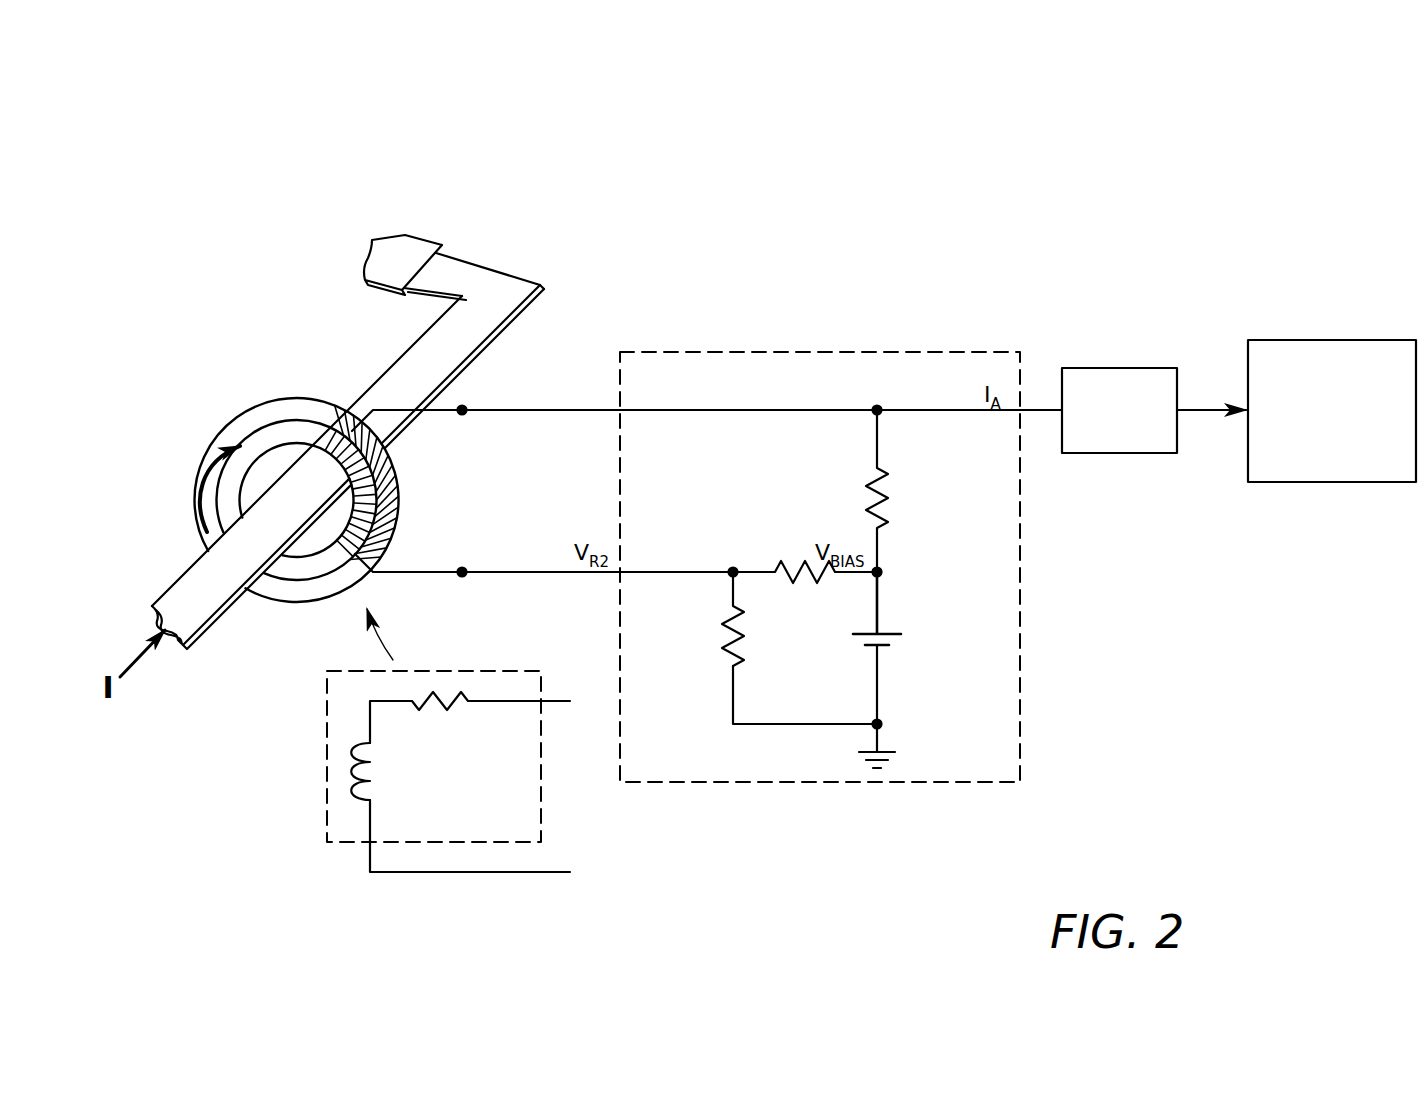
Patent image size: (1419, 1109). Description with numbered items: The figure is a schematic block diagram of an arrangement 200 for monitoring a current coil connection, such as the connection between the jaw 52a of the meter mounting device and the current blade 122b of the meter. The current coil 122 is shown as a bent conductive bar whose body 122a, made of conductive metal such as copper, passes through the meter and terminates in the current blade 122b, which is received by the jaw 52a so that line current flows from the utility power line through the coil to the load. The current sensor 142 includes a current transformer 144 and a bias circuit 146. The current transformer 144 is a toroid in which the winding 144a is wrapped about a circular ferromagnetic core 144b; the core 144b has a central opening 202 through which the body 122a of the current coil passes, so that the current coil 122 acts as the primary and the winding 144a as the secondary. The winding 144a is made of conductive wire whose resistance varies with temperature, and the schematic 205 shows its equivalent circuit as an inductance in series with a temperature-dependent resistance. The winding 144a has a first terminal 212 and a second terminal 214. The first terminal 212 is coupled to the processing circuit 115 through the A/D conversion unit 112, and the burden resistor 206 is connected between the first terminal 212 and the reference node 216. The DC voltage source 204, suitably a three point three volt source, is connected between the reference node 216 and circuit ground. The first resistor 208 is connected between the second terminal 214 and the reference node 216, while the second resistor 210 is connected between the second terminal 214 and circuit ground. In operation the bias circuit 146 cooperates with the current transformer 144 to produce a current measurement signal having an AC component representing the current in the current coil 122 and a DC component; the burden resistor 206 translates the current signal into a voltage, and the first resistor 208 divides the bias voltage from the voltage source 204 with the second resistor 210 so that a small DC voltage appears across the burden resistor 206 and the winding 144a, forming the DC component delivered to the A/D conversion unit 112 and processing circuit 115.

The arrangement for monitoring a current coil connection 200 is at (1082, 188).
The current sensor 142 is at (763, 267).
The first current coil 122 is at (406, 424).
The body 122a is at (500, 318).
The current blade 122b is at (453, 252).
The jaw 52a is at (432, 236).
The current transformer 144 is at (366, 475).
The winding 144a is at (413, 483).
The core 144b is at (283, 603).
The central opening 202 is at (257, 474).
The first terminal 212 is at (468, 413).
The second terminal 214 is at (468, 569).
The bias circuit 146 is at (820, 529).
The burden resistor 206 is at (885, 490).
The first resistor 208 is at (795, 568).
The reference node 216 is at (881, 573).
The second resistor 210 is at (728, 635).
The DC voltage source 204 is at (882, 650).
The A/D conversion unit 112 is at (1115, 367).
The processing circuit 115 is at (1328, 339).
The schematic 205 is at (541, 810).